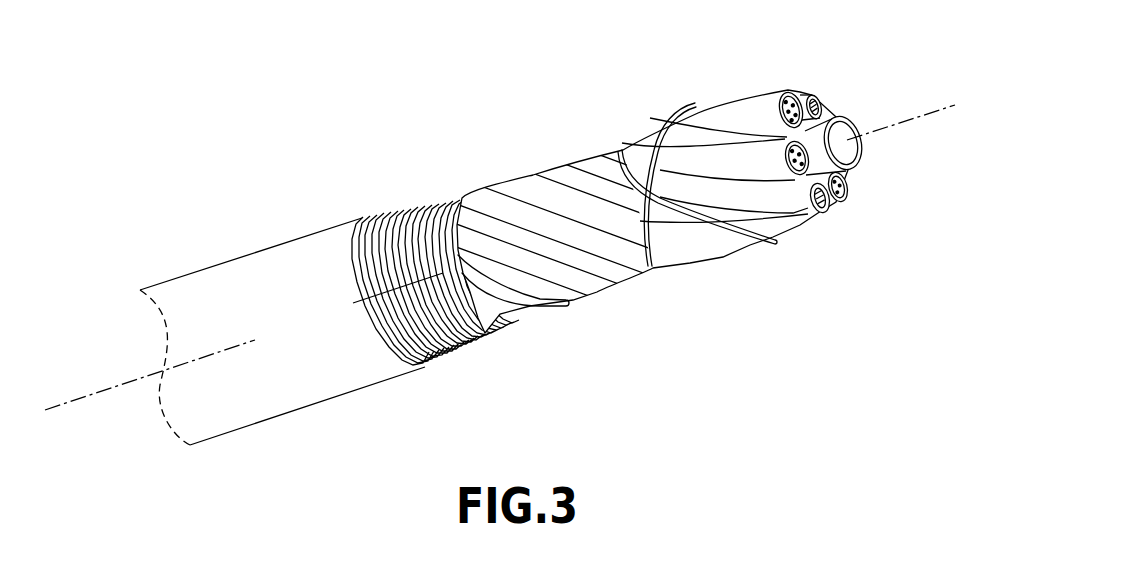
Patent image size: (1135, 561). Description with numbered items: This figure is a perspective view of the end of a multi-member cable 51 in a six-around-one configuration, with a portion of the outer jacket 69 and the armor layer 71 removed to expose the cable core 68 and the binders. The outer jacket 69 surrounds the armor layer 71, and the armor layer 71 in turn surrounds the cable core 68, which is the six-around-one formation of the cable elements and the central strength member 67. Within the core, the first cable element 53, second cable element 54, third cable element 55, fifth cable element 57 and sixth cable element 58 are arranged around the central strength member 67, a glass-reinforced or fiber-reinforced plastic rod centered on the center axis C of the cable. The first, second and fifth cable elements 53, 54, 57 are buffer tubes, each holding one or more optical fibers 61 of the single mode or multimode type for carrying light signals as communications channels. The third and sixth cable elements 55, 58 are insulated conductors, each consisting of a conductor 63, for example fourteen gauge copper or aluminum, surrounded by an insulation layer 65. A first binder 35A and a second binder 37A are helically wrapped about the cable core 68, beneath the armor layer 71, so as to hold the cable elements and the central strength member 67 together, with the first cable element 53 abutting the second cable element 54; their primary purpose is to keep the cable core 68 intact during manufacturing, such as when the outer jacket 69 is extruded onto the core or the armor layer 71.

The multi-member cable 51 is at (194, 224).
The outer jacket 69 is at (308, 334).
The armor layer 71 is at (418, 214).
The cable core 68 is at (571, 124).
The second binder 37A is at (483, 192).
The first binder 35A is at (773, 246).
The first cable element 53 is at (735, 168).
The second cable element 54 is at (750, 108).
The sixth cable element 58 is at (787, 210).
The optical fiber 61 is at (792, 92).
The third cable element 55 is at (808, 98).
The insulation layer 65 is at (830, 100).
The conductor 63 is at (824, 105).
The central strength member 67 is at (848, 138).
The fifth cable element 57 is at (833, 206).
The center axis C is at (945, 108).